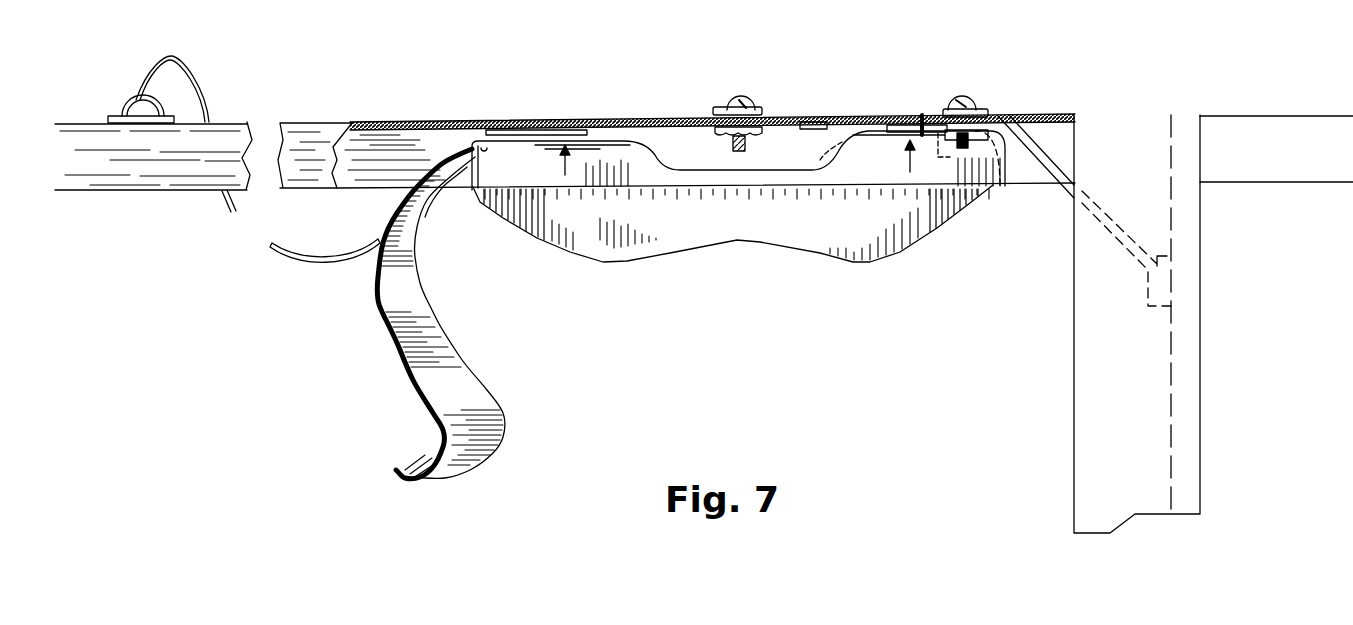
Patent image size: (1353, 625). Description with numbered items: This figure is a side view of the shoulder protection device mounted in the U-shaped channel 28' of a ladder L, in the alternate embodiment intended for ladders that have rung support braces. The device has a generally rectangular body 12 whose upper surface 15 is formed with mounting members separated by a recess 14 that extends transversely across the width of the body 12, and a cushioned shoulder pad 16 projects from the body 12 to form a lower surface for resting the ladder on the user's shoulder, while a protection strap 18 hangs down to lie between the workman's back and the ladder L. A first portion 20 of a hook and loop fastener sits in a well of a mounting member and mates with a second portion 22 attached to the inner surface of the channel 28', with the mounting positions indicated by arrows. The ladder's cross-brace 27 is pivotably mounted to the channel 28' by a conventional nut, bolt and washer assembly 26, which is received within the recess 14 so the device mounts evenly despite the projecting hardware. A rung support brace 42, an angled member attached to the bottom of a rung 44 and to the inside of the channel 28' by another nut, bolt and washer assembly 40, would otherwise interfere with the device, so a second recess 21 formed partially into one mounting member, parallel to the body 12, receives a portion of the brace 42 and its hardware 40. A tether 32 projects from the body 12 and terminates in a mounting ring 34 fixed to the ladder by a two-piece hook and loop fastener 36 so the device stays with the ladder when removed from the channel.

The body 12 is at (500, 147).
The recess 14 is at (695, 150).
The upper surface 15 is at (677, 167).
The cushioned shoulder pad 16 is at (577, 218).
The protection strap 18 is at (450, 415).
The first portion of hook and loop fastener 20 is at (922, 127).
The recess 21 is at (990, 143).
The second portion of hook and loop fastener 22 is at (905, 127).
The nut, bolt and washer assembly 26 is at (745, 97).
The cross-brace 27 is at (833, 118).
The U-shaped channel 28' is at (706, 110).
The tether 32 is at (306, 265).
The mounting ring 34 is at (132, 102).
The two-piece hook and loop fastener 36 is at (163, 97).
The nut, bolt and washer assembly 40 is at (960, 97).
The rung support brace 42 is at (1040, 138).
The rung 44 is at (1128, 124).
The ladder L is at (315, 130).